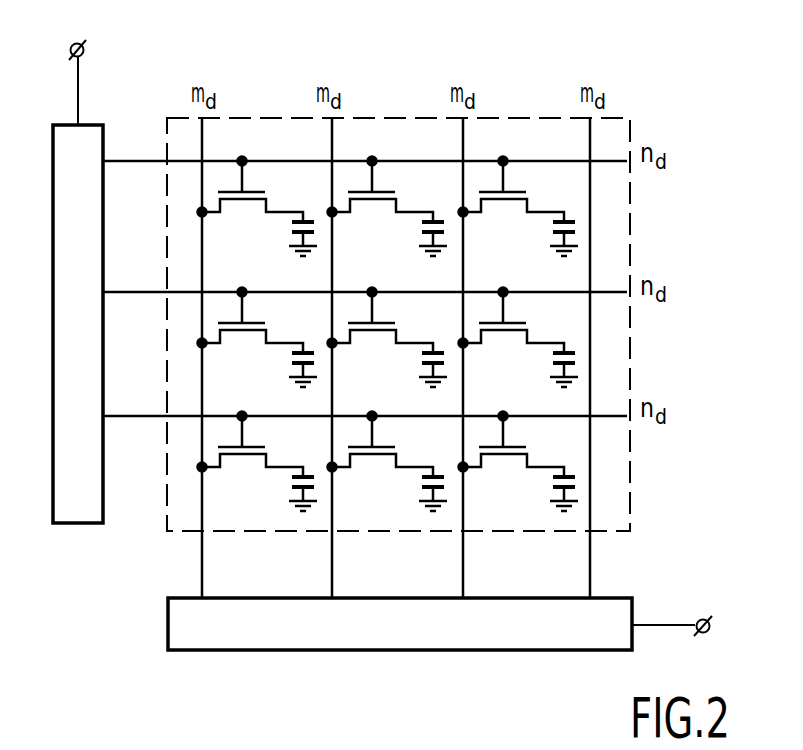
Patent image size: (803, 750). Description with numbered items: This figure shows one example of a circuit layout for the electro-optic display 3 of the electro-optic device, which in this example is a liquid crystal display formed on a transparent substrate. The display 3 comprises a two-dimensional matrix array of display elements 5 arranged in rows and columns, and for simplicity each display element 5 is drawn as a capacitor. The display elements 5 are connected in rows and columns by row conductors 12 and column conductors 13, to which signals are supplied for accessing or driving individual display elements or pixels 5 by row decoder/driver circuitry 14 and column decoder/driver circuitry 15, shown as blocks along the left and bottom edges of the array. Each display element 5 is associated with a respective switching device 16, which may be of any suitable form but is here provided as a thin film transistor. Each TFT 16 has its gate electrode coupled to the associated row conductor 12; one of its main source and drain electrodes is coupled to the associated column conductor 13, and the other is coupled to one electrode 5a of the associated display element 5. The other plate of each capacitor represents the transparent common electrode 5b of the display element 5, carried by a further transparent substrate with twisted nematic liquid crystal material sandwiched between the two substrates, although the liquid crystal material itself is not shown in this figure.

The electro-optic display 3 is at (544, 108).
The display element 5 is at (562, 222).
The electrode 5a is at (286, 210).
The common electrode 5b is at (295, 237).
The row conductor 12 is at (591, 230).
The column conductor 13 is at (593, 143).
The row decoder/driver circuitry 14 is at (79, 508).
The column decoder/driver circuitry 15 is at (460, 636).
The switching device 16 is at (521, 190).